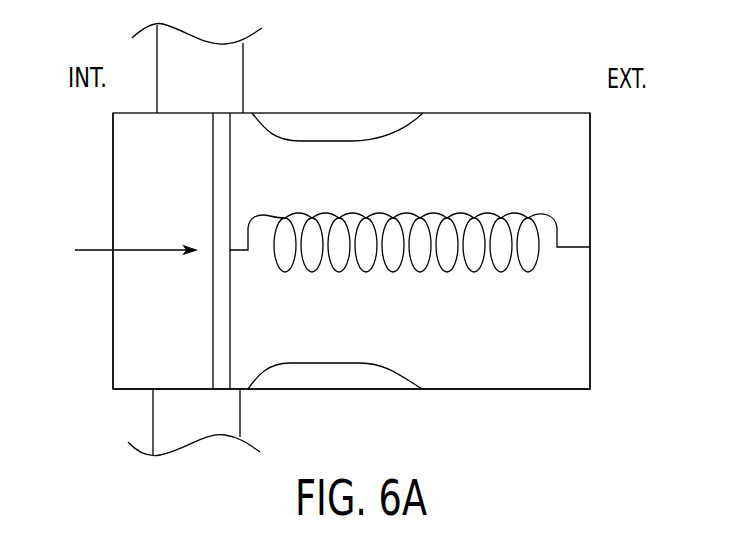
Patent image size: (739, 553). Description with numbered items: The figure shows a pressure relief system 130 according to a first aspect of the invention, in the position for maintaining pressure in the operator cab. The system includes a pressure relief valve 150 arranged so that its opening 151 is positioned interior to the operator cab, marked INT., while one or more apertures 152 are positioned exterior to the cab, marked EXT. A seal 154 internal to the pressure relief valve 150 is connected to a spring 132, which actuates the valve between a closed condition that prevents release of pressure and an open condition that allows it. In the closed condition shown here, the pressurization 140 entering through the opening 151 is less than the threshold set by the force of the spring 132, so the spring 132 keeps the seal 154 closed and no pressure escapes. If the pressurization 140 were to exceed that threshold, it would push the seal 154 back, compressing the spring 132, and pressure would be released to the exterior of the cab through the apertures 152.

The pressure relief system 130 is at (497, 73).
The spring 132 is at (418, 284).
The pressurization 140 is at (129, 252).
The pressure relief valve 150 is at (547, 390).
The opening 151 is at (113, 332).
The apertures 152 is at (332, 122).
The seal 154 is at (213, 186).